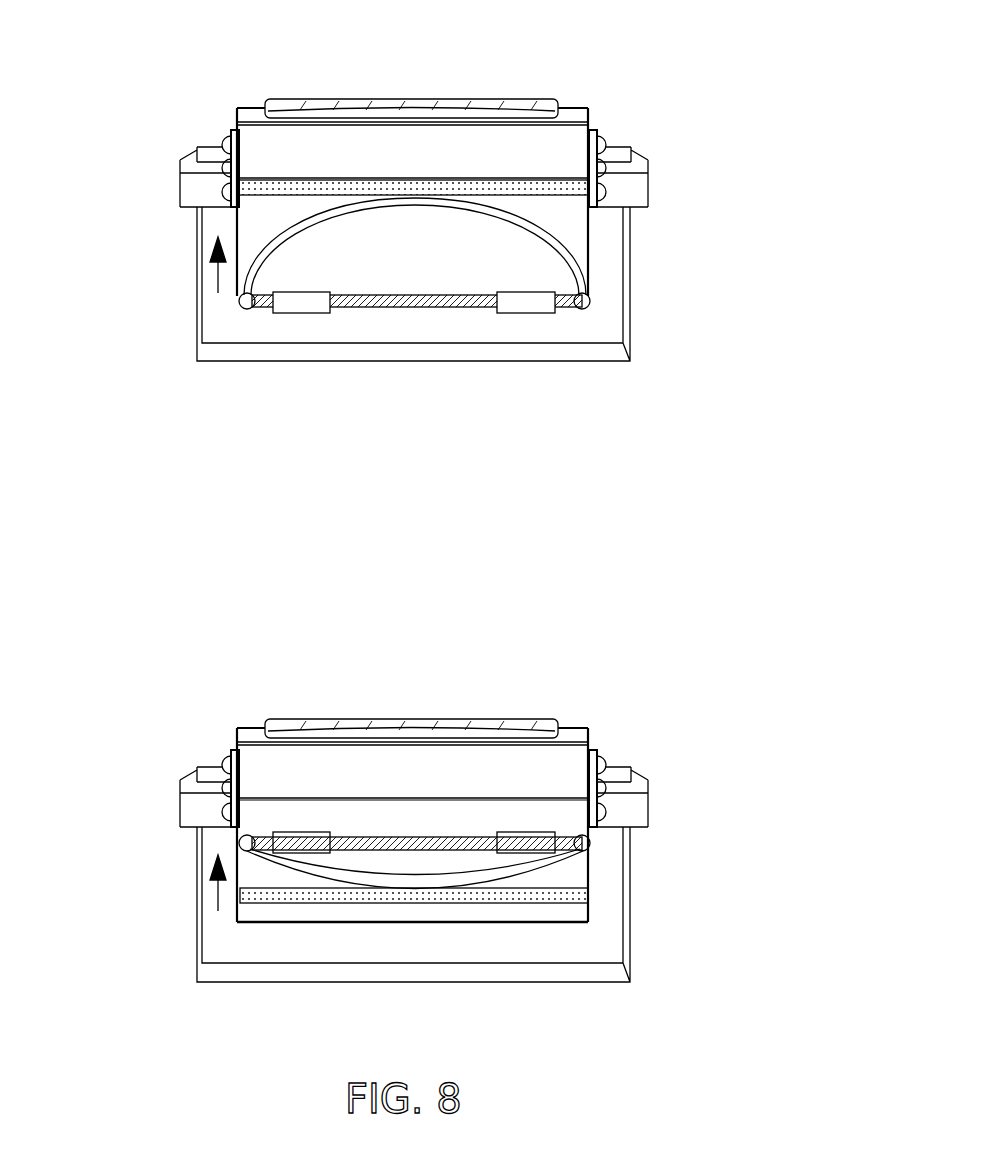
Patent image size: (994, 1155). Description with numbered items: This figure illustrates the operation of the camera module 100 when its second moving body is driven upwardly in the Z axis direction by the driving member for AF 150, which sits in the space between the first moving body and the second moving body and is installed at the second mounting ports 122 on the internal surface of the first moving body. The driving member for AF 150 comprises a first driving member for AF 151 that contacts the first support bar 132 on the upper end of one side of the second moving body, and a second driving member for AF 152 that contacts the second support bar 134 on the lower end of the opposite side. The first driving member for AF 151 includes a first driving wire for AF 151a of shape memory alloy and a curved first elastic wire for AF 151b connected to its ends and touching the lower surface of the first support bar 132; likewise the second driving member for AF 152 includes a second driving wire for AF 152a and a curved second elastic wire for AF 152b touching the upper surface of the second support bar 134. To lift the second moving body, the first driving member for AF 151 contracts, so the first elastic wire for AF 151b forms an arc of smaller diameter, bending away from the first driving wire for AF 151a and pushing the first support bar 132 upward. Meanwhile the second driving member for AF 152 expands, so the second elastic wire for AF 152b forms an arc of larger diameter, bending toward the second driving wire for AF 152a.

The camera module 100 is at (428, 31).
The second mounting ports 122 is at (300, 308).
The first support bar 132 is at (594, 208).
The second support bar 134 is at (414, 954).
The driving member for AF 150 is at (752, 930).
The first driving member for AF 151 is at (465, 425).
The first driving wire for AF 151a is at (368, 308).
The first elastic wire for AF 151b is at (440, 200).
The second driving member for AF 152 is at (414, 748).
The second driving wire for AF 152a is at (414, 751).
The second elastic wire for AF 152b is at (415, 770).